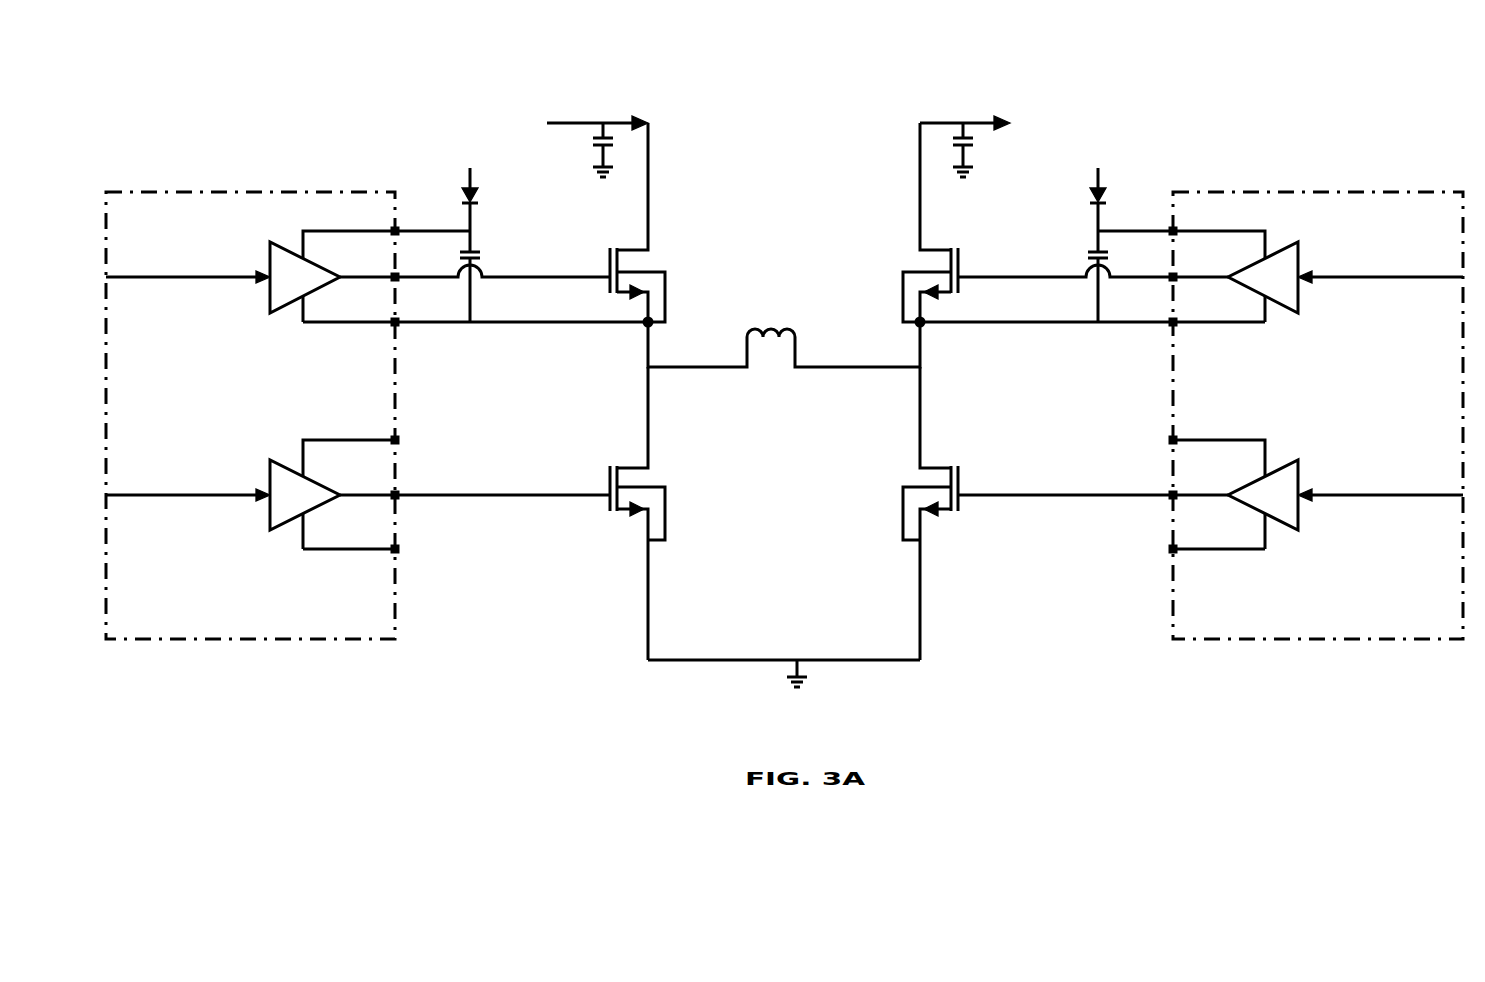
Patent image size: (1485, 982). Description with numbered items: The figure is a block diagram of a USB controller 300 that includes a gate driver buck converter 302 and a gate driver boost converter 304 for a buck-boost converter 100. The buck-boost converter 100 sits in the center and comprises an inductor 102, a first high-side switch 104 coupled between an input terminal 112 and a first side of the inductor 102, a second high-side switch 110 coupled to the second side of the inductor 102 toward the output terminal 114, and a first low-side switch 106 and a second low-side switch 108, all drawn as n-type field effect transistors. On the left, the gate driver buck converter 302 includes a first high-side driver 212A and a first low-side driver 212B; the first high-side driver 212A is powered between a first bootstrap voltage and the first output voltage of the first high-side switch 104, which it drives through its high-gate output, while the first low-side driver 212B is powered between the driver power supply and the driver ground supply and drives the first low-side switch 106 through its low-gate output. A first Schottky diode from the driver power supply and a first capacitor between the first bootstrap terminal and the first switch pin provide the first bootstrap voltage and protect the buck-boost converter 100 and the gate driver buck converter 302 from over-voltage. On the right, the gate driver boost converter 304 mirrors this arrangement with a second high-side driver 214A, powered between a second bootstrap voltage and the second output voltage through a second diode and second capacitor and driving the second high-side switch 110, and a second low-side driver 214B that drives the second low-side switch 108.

The USB controller 300 is at (227, 136).
The buck-boost converter 100 is at (810, 213).
The inductor 102 is at (750, 337).
The first high-side switch 104 is at (645, 250).
The first low-side switch 106 is at (635, 466).
The second low-side switch 108 is at (951, 466).
The second high-side switch 110 is at (923, 250).
The input terminal 112 is at (578, 122).
The output voltage terminal Vout 114 is at (918, 122).
The first high-side driver 212A is at (275, 258).
The first low-side driver 212B is at (275, 476).
The second high-side driver 214A is at (1293, 258).
The second low-side driver 214B is at (1293, 476).
The gate driver buck converter 302 is at (218, 640).
The gate driver boost converter 304 is at (1355, 640).